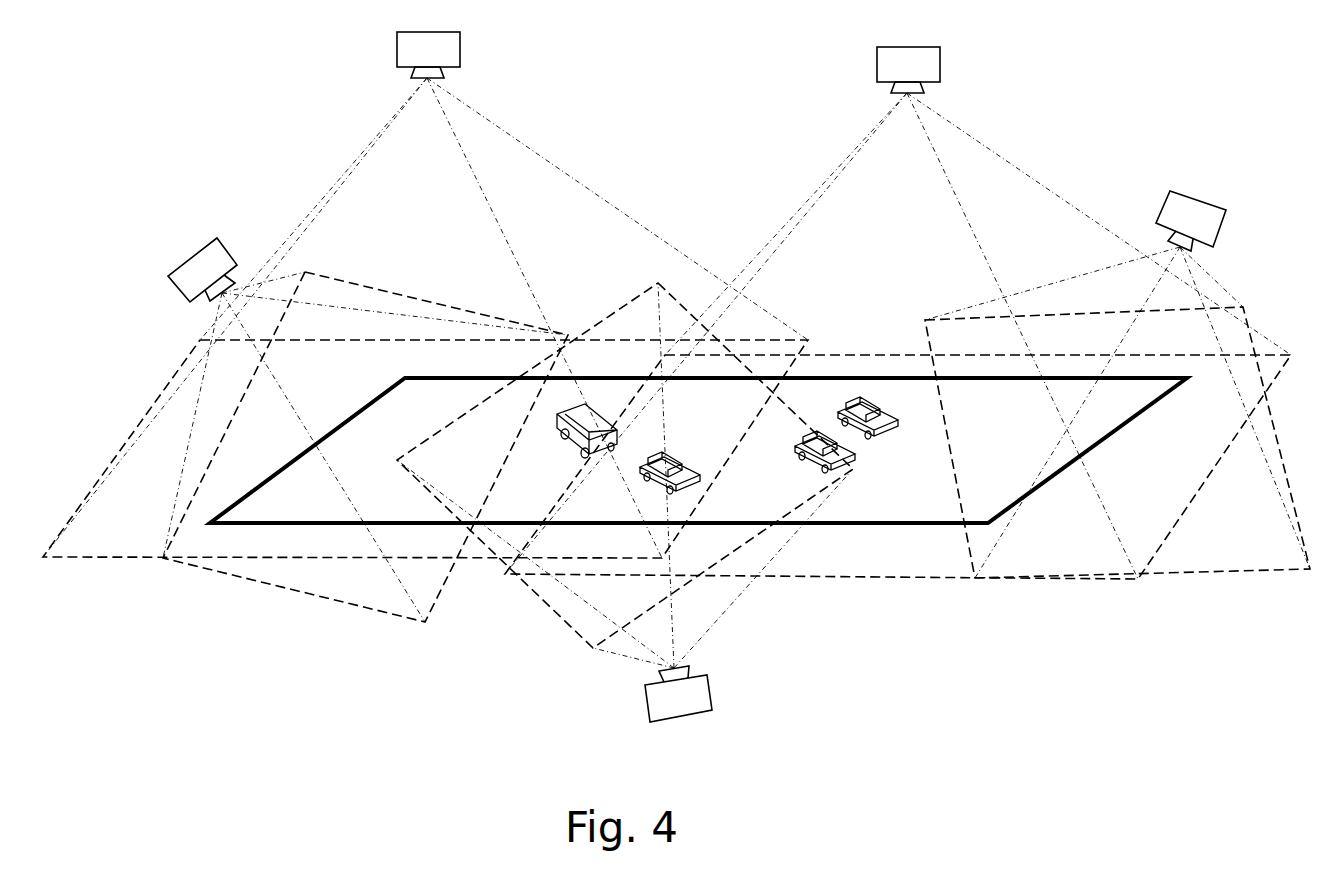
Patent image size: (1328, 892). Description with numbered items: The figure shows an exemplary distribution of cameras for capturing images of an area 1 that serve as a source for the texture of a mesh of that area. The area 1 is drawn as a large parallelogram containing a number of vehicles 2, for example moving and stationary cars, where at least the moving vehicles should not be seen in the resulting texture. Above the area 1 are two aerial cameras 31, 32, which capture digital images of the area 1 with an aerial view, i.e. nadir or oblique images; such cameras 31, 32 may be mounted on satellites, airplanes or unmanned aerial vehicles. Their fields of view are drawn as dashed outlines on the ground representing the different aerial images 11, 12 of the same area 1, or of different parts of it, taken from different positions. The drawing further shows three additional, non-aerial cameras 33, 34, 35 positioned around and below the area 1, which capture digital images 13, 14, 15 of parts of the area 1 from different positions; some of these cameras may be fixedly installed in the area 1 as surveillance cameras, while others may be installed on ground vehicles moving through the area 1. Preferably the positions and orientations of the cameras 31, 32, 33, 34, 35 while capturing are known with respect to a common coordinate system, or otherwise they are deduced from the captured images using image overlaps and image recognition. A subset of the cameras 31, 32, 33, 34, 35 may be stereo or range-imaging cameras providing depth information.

The area 1 is at (297, 524).
The vehicles 2 is at (827, 413).
The aerial image 11 is at (951, 578).
The aerial image 12 is at (108, 558).
The digital image 13 is at (386, 291).
The digital image 14 is at (970, 315).
The digital image 15 is at (636, 299).
The aerial camera 31 is at (890, 68).
The aerial camera 32 is at (405, 52).
The additional camera 33 is at (198, 269).
The additional camera 34 is at (1192, 217).
The additional camera 35 is at (688, 697).